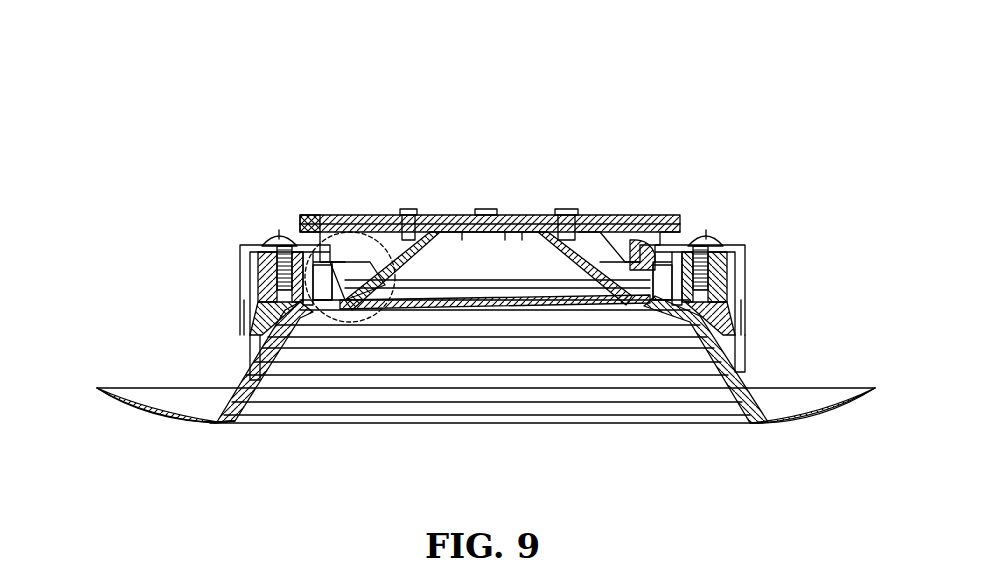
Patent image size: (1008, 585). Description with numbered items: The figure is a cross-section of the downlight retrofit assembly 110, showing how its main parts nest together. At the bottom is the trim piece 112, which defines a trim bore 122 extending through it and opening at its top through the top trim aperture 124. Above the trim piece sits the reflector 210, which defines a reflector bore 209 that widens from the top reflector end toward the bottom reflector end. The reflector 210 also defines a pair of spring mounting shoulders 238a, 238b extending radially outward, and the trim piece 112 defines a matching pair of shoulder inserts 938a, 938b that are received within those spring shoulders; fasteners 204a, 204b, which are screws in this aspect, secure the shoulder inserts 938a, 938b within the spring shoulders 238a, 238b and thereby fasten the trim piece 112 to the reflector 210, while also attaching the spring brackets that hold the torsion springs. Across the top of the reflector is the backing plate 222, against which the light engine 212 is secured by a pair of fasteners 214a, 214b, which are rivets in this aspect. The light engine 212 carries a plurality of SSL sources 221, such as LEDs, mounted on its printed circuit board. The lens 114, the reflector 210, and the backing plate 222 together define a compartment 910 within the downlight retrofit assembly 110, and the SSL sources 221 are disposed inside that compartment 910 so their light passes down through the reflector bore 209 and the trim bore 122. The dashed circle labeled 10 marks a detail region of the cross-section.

The downlight retrofit assembly 110 is at (480, 265).
The connection detail region 10 is at (322, 232).
The trim piece 112 is at (615, 400).
The lens 114 is at (445, 235).
The trim bore 122 is at (685, 397).
The top trim aperture 124 is at (360, 290).
The fastener 204a is at (690, 236).
The fastener 204b is at (275, 240).
The reflector bore 209 is at (596, 216).
The reflector 210 is at (640, 218).
The light engine 212 is at (465, 215).
The fastener 214a is at (568, 212).
The fastener 214b is at (406, 212).
The SSL source 221 is at (462, 236).
The backing plate 222 is at (365, 216).
The spring mounting shoulder 238a is at (713, 267).
The spring mounting shoulder 238b is at (262, 270).
The compartment 910 is at (435, 272).
The shoulder insert 938a is at (695, 283).
The shoulder insert 938b is at (262, 281).